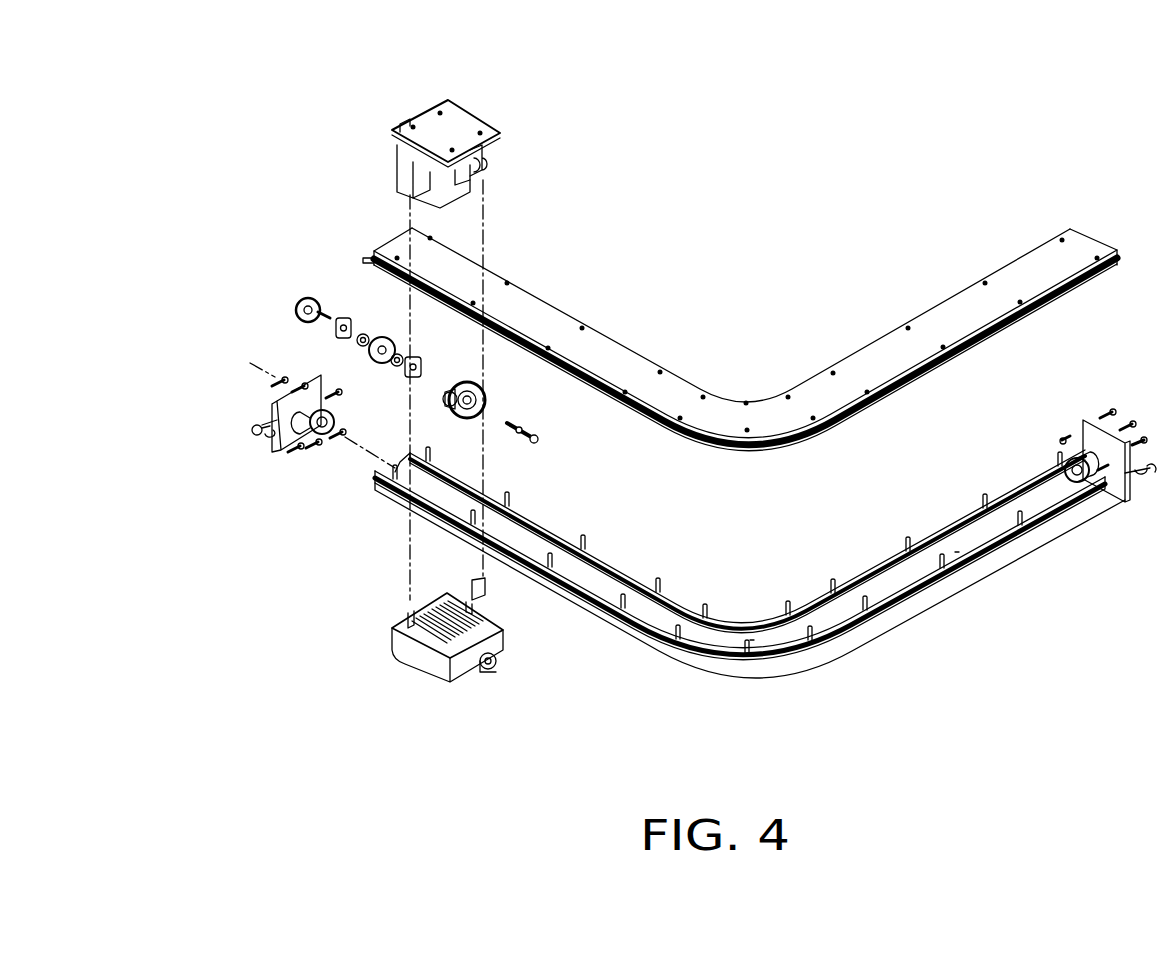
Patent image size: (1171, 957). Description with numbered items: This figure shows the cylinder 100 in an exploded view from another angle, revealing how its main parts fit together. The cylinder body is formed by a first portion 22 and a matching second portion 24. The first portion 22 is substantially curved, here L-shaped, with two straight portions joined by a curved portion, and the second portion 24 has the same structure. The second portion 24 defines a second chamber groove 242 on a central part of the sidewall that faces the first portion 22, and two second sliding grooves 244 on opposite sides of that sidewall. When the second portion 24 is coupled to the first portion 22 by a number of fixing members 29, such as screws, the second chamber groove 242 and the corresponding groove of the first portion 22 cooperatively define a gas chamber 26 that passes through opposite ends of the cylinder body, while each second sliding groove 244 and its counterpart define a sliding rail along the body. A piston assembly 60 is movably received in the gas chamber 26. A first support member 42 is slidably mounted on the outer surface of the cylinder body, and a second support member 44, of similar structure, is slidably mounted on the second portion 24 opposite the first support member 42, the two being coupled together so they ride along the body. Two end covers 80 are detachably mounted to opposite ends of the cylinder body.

The cylinder 100 is at (749, 92).
The first portion 22 is at (720, 408).
The second portion 24 is at (750, 569).
The gas chamber 26 is at (957, 545).
The fixing members 29 is at (751, 620).
The second chamber groove 242 is at (596, 580).
The second sliding grooves 244 is at (594, 610).
The first support member 42 is at (455, 120).
The second support member 44 is at (395, 640).
The piston assembly 60 is at (355, 300).
The end covers 80 is at (276, 410).